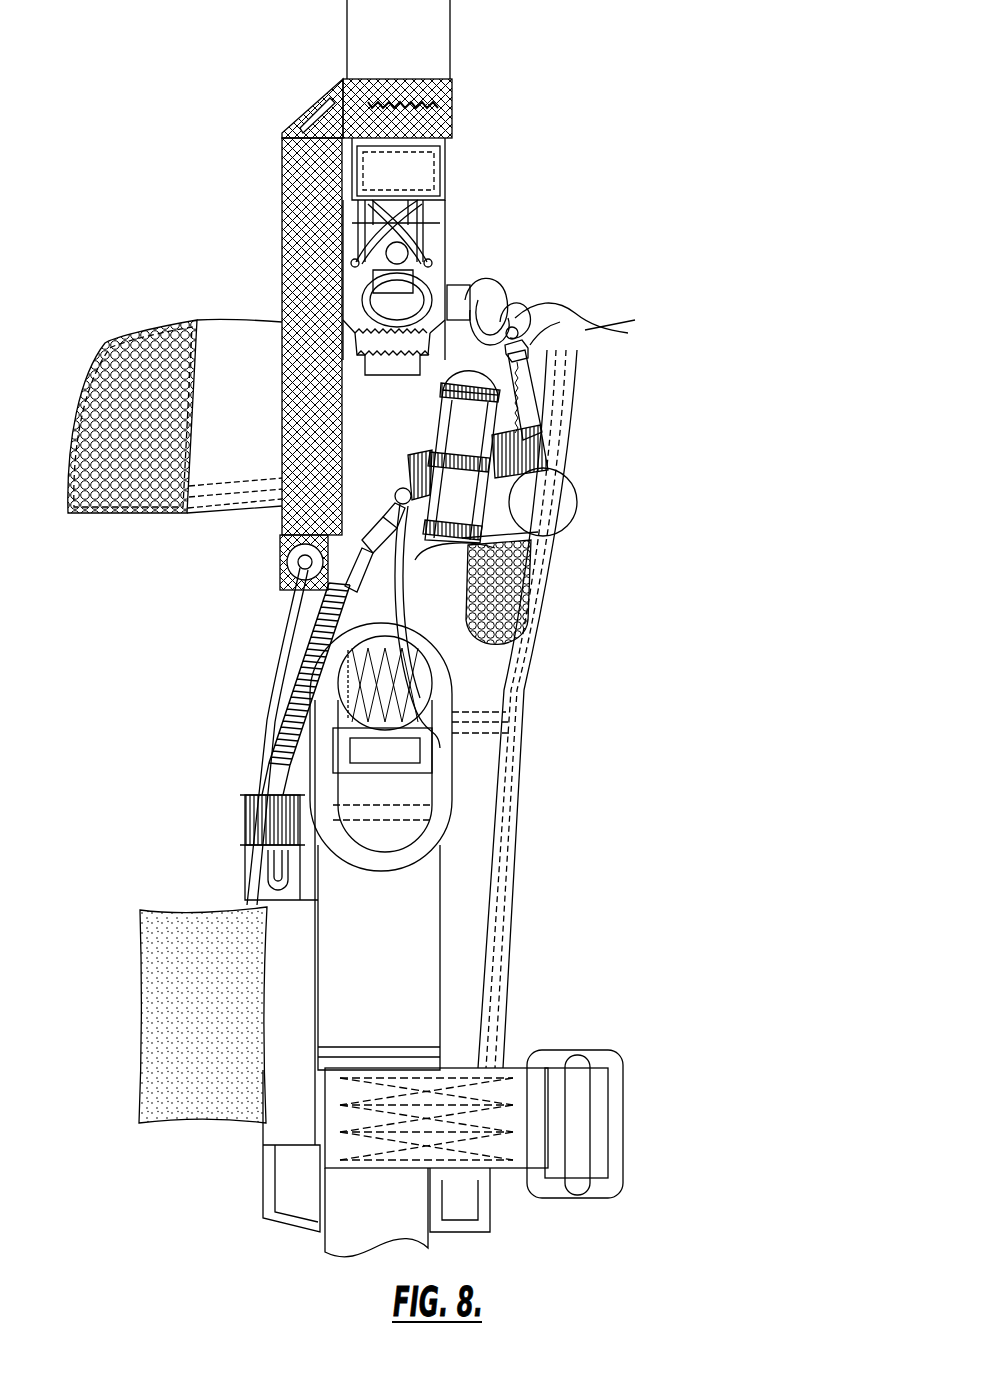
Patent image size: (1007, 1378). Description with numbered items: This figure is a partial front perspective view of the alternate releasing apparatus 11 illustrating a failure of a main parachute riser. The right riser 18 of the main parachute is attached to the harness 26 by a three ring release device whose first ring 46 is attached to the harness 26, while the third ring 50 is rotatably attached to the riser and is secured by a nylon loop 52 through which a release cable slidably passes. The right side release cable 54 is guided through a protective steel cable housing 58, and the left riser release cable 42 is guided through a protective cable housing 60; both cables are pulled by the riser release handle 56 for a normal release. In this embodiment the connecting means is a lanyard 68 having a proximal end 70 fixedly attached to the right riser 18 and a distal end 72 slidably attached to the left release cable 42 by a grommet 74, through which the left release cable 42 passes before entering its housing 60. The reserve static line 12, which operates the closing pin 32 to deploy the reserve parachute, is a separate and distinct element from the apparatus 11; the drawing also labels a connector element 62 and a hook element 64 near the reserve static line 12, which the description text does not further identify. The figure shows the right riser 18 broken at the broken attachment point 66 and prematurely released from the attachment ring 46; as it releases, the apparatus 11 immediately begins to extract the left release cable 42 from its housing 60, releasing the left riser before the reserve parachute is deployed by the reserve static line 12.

The releasing apparatus 11 is at (227, 267).
The reserve static line 12 is at (531, 294).
The right riser 18 is at (428, 46).
The harness 26 is at (455, 972).
The closing pin 32 is at (572, 302).
The release cable 42 is at (312, 600).
The first ring 46 is at (445, 718).
The third ring 50 is at (436, 268).
The loop 52 is at (425, 215).
The release cable 54 is at (540, 538).
The handle 56 is at (200, 1080).
The cable housing 58 is at (262, 717).
The cable housing 60 is at (313, 778).
The clasp 62 is at (524, 316).
The hook 64 is at (458, 300).
The broken attachment point 66 is at (382, 345).
The lanyard 68 is at (303, 200).
The proximal end 70 is at (447, 97).
The distal end 72 is at (298, 580).
The grommet 74 is at (298, 552).